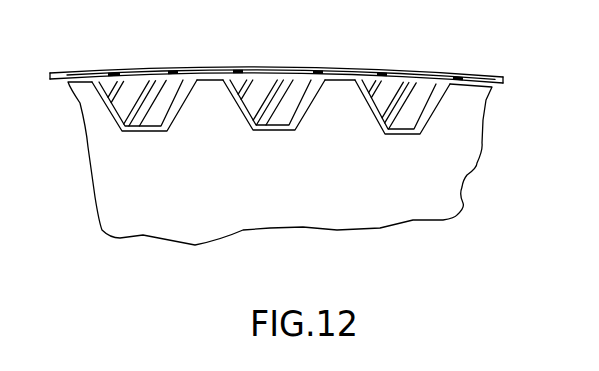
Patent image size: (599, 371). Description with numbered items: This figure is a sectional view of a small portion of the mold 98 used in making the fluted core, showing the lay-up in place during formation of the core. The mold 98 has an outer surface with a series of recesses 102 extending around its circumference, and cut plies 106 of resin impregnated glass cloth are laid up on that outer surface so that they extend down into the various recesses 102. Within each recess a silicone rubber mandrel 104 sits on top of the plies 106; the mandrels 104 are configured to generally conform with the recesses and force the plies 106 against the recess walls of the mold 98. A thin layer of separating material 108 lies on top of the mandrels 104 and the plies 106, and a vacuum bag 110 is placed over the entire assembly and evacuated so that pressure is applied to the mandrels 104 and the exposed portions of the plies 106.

The mold 98 is at (408, 212).
The recesses 102 is at (172, 113).
The silicone rubber mandrel 104 is at (142, 93).
The cut cloth plies 106 is at (185, 108).
The separating material 108 is at (406, 82).
The vacuum bag 110 is at (332, 70).